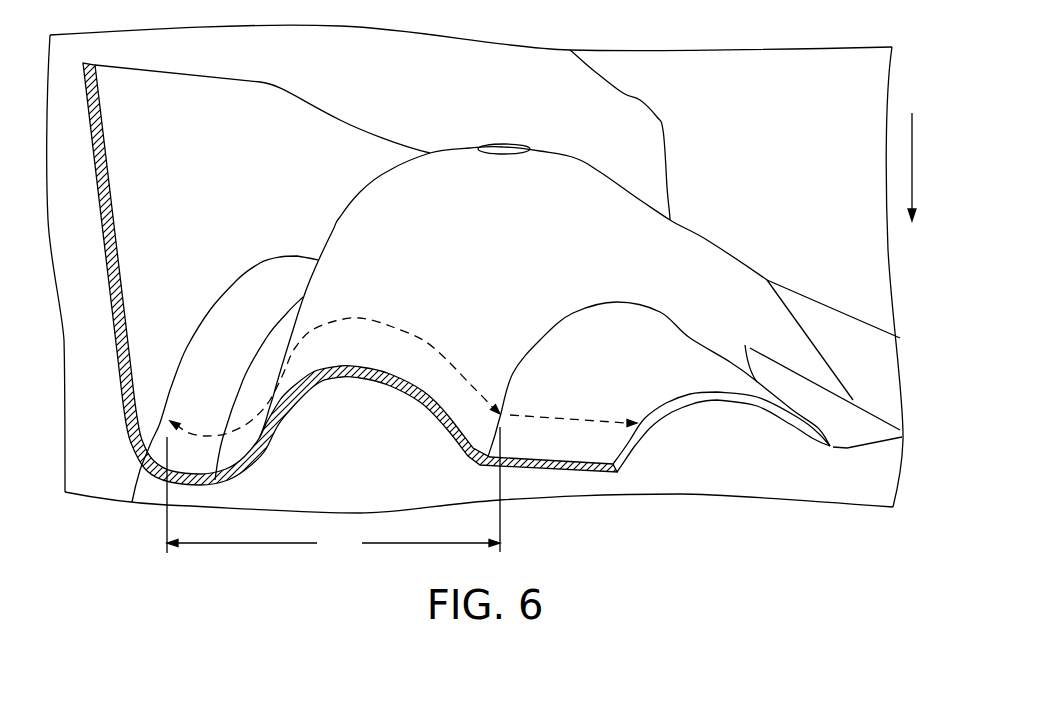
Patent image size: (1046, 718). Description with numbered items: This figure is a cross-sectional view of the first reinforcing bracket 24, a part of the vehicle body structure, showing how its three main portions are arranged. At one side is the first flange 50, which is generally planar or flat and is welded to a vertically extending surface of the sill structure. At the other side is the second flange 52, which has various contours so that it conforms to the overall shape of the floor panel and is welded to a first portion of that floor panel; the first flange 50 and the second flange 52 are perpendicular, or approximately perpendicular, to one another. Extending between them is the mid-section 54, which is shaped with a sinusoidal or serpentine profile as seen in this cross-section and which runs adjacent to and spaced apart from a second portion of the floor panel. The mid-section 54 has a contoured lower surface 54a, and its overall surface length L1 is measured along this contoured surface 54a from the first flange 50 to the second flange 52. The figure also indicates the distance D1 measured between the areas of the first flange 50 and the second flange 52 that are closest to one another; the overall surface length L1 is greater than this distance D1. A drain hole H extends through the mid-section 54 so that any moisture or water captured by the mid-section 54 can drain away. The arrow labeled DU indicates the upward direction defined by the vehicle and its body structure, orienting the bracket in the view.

The first flange 50 is at (165, 117).
The first reinforcing bracket 24 is at (575, 156).
The drain hole H is at (492, 146).
The mid-section 54 is at (276, 420).
The contoured lower surface 54a is at (472, 337).
The second flange 52 is at (577, 440).
The overall surface length L1 is at (350, 322).
The distance D1 is at (333, 493).
The upward direction DU is at (913, 153).